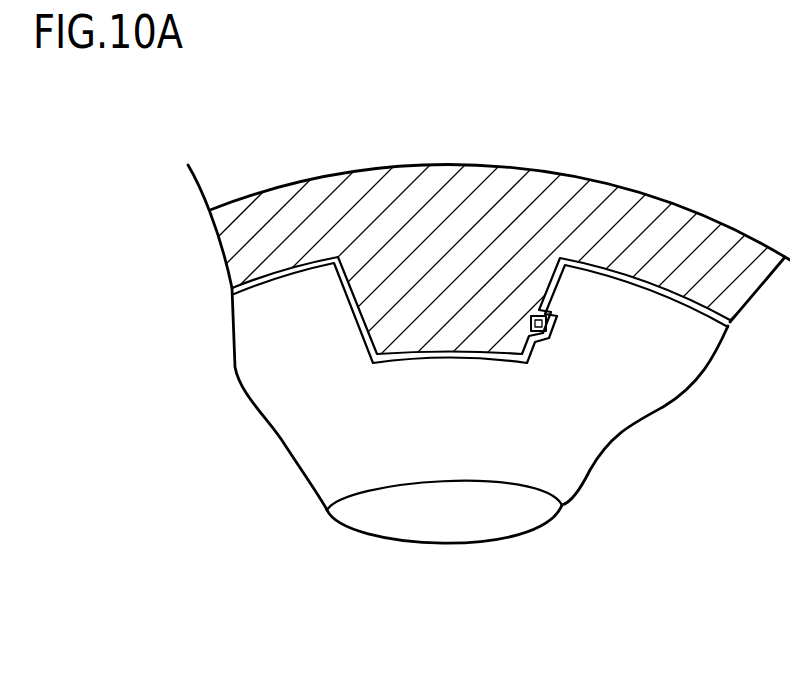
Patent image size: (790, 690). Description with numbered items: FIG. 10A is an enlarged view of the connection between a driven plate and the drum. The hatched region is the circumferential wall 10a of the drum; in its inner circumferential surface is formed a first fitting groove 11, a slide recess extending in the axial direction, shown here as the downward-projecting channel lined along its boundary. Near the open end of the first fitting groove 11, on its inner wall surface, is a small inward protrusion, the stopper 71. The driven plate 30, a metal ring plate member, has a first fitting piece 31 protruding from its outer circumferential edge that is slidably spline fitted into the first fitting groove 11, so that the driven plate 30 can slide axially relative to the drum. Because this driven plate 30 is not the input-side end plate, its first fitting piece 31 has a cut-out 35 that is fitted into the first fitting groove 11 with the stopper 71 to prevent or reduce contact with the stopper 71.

The circumferential wall 10a is at (385, 197).
The first fitting groove 11 is at (648, 293).
The stopper 71 is at (543, 322).
The first fitting piece 31 is at (667, 355).
The cut-out 35 is at (553, 323).
The driven plate 30 is at (573, 438).